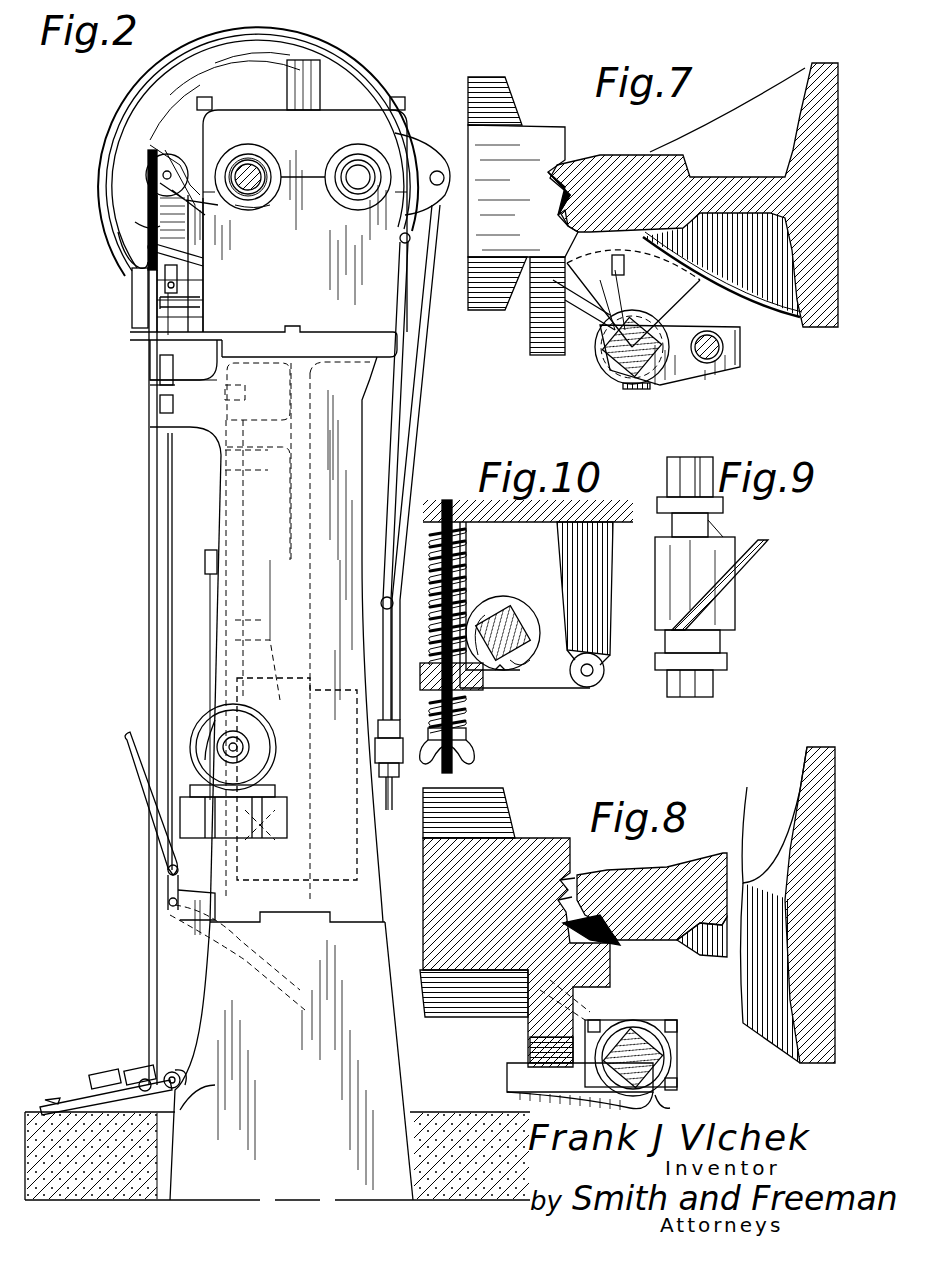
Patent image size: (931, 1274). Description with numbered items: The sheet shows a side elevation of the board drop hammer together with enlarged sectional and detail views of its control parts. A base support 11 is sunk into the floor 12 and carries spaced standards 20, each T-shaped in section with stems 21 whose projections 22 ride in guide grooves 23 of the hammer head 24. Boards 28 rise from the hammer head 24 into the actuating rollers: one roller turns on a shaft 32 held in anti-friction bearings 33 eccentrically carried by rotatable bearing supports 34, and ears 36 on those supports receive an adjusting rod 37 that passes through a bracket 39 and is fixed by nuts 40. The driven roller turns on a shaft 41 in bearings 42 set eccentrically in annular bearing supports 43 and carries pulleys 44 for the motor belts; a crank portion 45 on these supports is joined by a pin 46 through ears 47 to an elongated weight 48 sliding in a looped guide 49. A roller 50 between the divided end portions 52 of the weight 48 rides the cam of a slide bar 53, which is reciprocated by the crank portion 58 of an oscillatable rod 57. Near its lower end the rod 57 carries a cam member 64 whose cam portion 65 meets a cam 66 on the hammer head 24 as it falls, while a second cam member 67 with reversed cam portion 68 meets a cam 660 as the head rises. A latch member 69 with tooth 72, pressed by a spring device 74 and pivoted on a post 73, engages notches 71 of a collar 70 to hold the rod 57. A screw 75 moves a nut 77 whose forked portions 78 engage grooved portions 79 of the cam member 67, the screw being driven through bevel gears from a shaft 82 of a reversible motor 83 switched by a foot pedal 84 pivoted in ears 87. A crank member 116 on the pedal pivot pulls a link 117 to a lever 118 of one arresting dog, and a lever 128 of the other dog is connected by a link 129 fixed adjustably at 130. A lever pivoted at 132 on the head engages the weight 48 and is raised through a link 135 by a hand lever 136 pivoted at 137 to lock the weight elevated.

In FIG. 2, the base support 11 is at (212, 993).
In FIG. 2, the floor 12 is at (277, 1129).
In FIG. 7, the standards 20 is at (805, 70).
In FIG. 10, the standards 20 is at (595, 515).
In FIG. 8, the standards 20 is at (810, 758).
In FIG. 7, the stems 21 is at (620, 160).
In FIG. 8, the stems 21 is at (615, 880).
In FIG. 7, the projections 22 is at (547, 180).
In FIG. 8, the projections 22 is at (612, 940).
In FIG. 7, the guide grooves 23 is at (558, 222).
In FIG. 8, the guide grooves 23 is at (572, 880).
In FIG. 2, the hammer head 24 is at (335, 682).
In FIG. 7, the hammer head 24 is at (542, 135).
In FIG. 8, the hammer head 24 is at (535, 848).
In FIG. 2, the boards 28 is at (312, 70).
In FIG. 2, the shaft 32 is at (340, 165).
In FIG. 2, the anti-friction bearings 33 is at (345, 195).
In FIG. 2, the bearing supports 34 is at (358, 160).
In FIG. 2, the ears 36 is at (438, 160).
In FIG. 2, the adjusting rod 37 is at (424, 395).
In FIG. 2, the bracket 39 is at (375, 755).
In FIG. 2, the nuts 40 is at (375, 726).
In FIG. 2, the shaft 41 is at (255, 162).
In FIG. 2, the anti-friction bearings 42 is at (240, 165).
In FIG. 2, the bearing supports 43 is at (250, 208).
In FIG. 2, the pulleys 44 is at (125, 107).
In FIG. 2, the crank portion 45 is at (185, 148).
In FIG. 2, the pin 46 is at (165, 176).
In FIG. 2, the ears 47 is at (158, 176).
In FIG. 2, the weight 48 is at (150, 222).
In FIG. 2, the looped guide 49 is at (132, 290).
In FIG. 2, the roller 50 is at (160, 362).
In FIG. 2, the divided end portions 52 is at (185, 385).
In FIG. 2, the slide bar 53 is at (173, 406).
In FIG. 7, the oscillatable rod 57 is at (620, 365).
In FIG. 10, the oscillatable rod 57 is at (512, 620).
In FIG. 9, the oscillatable rod 57 is at (675, 475).
In FIG. 8, the oscillatable rod 57 is at (635, 1040).
In FIG. 2, the crank portion 58 is at (240, 381).
In FIG. 8, the cam member 64 is at (672, 1107).
In FIG. 8, the cam portion 65 is at (507, 1082).
In FIG. 7, the cam 66 is at (530, 348).
In FIG. 8, the cam 66 is at (530, 1035).
In FIG. 2, the cam member 67 is at (205, 562).
In FIG. 7, the cam member 67 is at (598, 358).
In FIG. 9, the cam member 67 is at (723, 505).
In FIG. 7, the cam portion 68 is at (642, 280).
In FIG. 9, the cam portion 68 is at (750, 568).
In FIG. 10, the latch member 69 is at (565, 690).
In FIG. 10, the collar 70 is at (528, 668).
In FIG. 10, the notches 71 is at (480, 618).
In FIG. 10, the tooth 72 is at (500, 672).
In FIG. 10, the post 73 is at (600, 650).
In FIG. 10, the spring device 74 is at (435, 606).
In FIG. 7, the screw 75 is at (715, 335).
In FIG. 7, the nut 77 is at (738, 365).
In FIG. 7, the forked portions 78 is at (638, 390).
In FIG. 9, the grooved portions 79 is at (715, 530).
In FIG. 2, the shaft 82 is at (243, 750).
In FIG. 2, the reversible motor 83 is at (205, 730).
In FIG. 2, the foot pedal 84 is at (74, 1091).
In FIG. 2, the ears 87 is at (203, 1091).
In FIG. 2, the crank member 116 is at (165, 1068).
In FIG. 2, the link 117 is at (147, 715).
In FIG. 2, the lever 118 is at (195, 252).
In FIG. 2, the lever 128 is at (400, 236).
In FIG. 2, the link 129 is at (408, 432).
In FIG. 2, the adjustable fixing 130 is at (388, 712).
In FIG. 10, the adjustable fixing 130 is at (443, 636).
In FIG. 2, the pivot 132 is at (200, 305).
In FIG. 2, the link 135 is at (166, 547).
In FIG. 2, the lever 136 is at (168, 890).
In FIG. 2, the pivot 137 is at (168, 905).
In FIG. 7, the cam 660 is at (722, 274).
In FIG. 8, the cam 660 is at (630, 968).